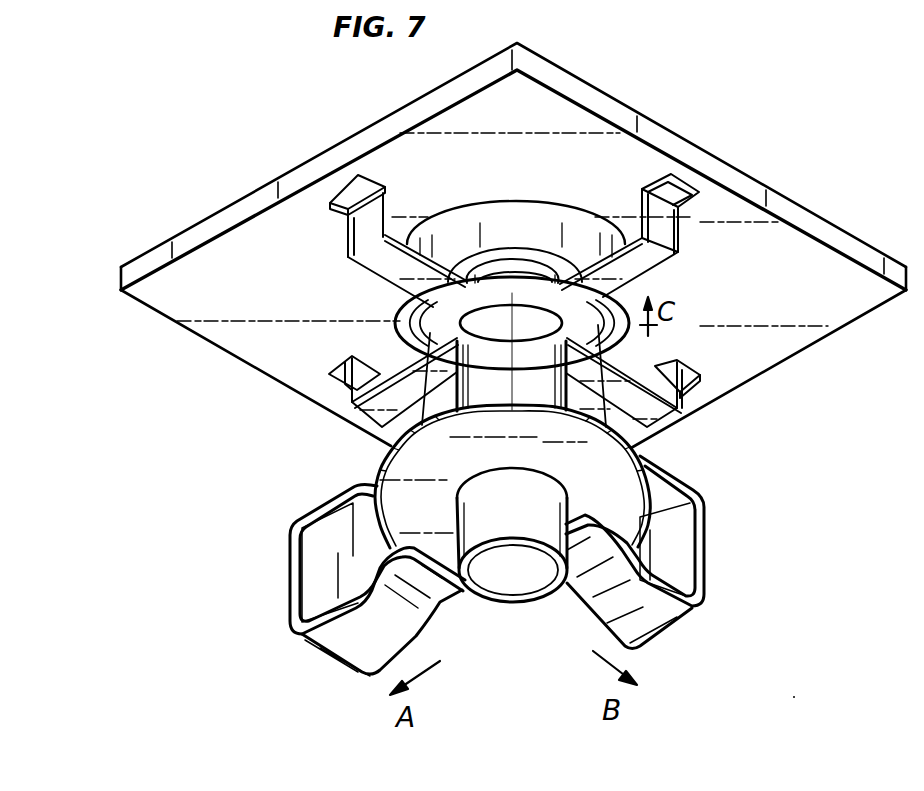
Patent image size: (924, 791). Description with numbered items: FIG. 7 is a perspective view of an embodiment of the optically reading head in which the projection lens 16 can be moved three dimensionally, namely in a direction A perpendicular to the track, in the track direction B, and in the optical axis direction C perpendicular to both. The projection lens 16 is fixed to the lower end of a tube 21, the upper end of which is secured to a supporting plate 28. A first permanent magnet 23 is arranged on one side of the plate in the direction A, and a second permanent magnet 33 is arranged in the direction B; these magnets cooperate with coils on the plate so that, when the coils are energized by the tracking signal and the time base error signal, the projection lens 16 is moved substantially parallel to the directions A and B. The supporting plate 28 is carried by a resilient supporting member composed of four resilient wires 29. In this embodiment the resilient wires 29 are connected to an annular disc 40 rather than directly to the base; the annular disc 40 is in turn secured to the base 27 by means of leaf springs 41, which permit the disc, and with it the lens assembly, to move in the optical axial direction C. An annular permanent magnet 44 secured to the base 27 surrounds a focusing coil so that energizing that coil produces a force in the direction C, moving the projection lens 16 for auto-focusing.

The projection lens 16 is at (505, 583).
The tube 21 is at (538, 597).
The first permanent magnet 23 is at (292, 593).
The base 27 is at (813, 213).
The supporting plate 28 is at (405, 478).
The resilient wires 29 is at (430, 333).
The second permanent magnet 33 is at (703, 570).
The annular disc 40 is at (617, 333).
The leaf springs 41 is at (378, 268).
The annular permanent magnet 44 is at (530, 222).